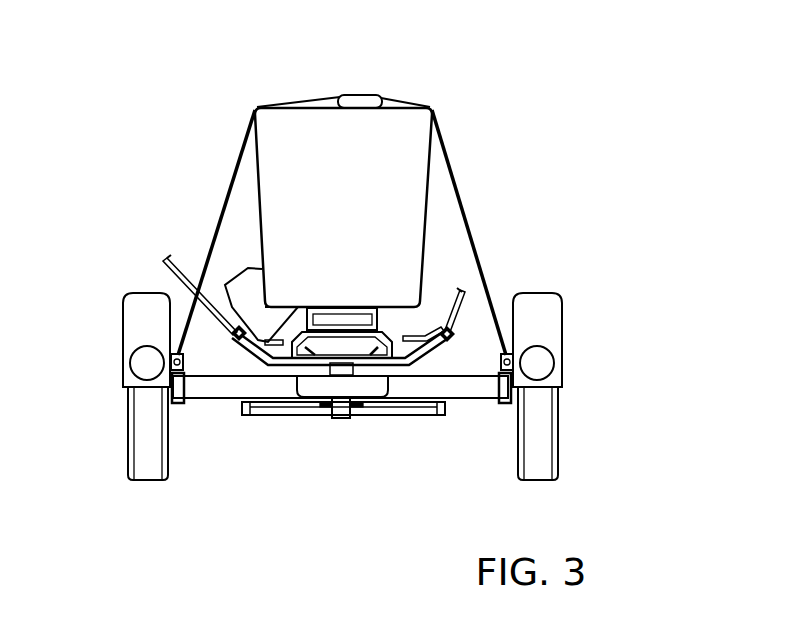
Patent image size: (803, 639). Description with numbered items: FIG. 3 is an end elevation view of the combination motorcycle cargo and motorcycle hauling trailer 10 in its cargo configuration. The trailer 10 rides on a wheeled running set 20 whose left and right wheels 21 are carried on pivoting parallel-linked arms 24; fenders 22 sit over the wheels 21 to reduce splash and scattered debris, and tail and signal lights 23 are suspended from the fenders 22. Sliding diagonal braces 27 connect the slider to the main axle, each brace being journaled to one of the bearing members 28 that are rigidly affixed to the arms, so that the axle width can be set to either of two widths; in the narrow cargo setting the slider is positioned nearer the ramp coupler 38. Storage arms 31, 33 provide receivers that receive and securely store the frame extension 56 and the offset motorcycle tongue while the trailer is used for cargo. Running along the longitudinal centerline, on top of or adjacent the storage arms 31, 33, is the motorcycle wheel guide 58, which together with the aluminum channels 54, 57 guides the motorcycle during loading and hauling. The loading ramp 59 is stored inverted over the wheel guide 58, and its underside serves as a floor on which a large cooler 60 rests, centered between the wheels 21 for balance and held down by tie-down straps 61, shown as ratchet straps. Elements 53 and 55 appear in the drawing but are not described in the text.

The combination motorcycle cargo and motorcycle hauling trailer 10 is at (561, 78).
The wheeled running set 20 is at (368, 422).
The wheels 21 is at (142, 422).
The fenders 22 is at (134, 333).
The tail and signal lights 23 is at (135, 362).
The parallel-linked arm 24 is at (235, 396).
The sliding diagonal braces 27 is at (277, 412).
The bearing members 28 is at (240, 415).
The storage arm 31 is at (228, 385).
The storage arm 33 is at (432, 352).
The ramp coupler 38 is at (310, 392).
The strut 53 is at (168, 260).
The aluminum channel 54 is at (233, 282).
The cradle arm 55 is at (230, 328).
The frame extension 56 is at (452, 324).
The aluminum channel 57 is at (466, 290).
The motorcycle wheel guide 58 is at (383, 365).
The loading ramp 59 is at (397, 336).
The cooler 60 is at (355, 189).
The tie-down straps 61 is at (453, 177).